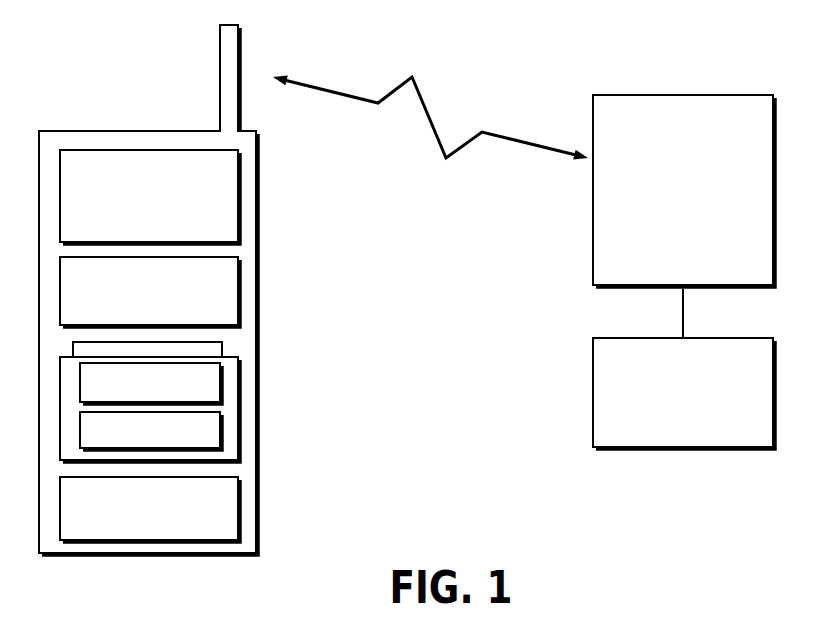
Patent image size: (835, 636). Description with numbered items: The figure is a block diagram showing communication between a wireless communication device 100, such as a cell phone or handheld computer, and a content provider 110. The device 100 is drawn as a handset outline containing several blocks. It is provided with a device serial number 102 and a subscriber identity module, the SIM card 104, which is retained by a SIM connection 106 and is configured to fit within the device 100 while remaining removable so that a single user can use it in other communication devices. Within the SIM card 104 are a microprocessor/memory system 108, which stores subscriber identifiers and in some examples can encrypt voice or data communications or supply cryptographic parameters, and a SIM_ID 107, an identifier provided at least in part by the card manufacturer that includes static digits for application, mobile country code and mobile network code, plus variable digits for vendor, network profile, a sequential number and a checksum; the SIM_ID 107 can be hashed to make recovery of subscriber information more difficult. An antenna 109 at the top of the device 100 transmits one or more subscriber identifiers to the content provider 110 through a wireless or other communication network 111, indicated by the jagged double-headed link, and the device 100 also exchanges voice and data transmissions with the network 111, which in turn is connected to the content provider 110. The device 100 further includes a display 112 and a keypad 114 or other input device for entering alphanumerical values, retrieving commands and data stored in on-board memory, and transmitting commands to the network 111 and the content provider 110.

The wireless communication device 100 is at (76, 118).
The device serial number 102 is at (130, 315).
The subscriber identity module 104 is at (225, 453).
The SIM connection 106 is at (224, 349).
The SIM_ID 107 is at (200, 390).
The microprocessor/memory system 108 is at (131, 440).
The antenna 109 is at (236, 33).
The content provider 110 is at (664, 431).
The network 111 is at (664, 215).
The display 112 is at (130, 221).
The keypad 114 is at (130, 531).